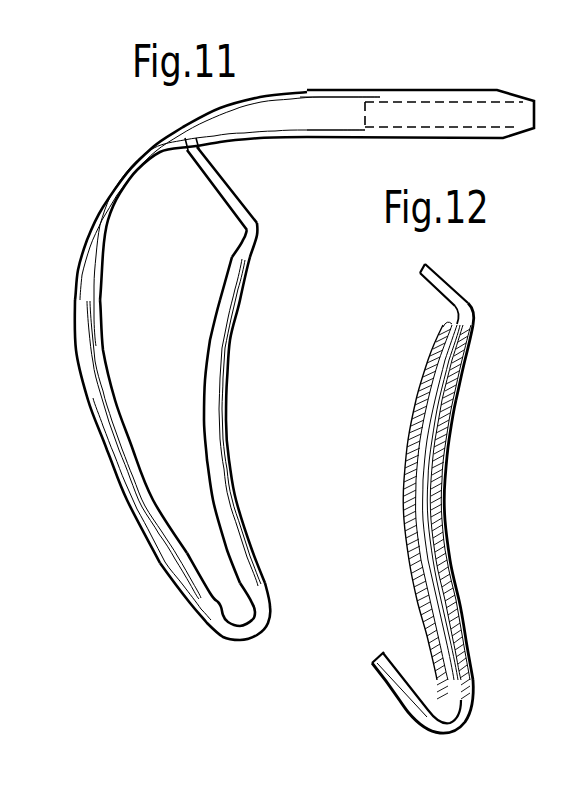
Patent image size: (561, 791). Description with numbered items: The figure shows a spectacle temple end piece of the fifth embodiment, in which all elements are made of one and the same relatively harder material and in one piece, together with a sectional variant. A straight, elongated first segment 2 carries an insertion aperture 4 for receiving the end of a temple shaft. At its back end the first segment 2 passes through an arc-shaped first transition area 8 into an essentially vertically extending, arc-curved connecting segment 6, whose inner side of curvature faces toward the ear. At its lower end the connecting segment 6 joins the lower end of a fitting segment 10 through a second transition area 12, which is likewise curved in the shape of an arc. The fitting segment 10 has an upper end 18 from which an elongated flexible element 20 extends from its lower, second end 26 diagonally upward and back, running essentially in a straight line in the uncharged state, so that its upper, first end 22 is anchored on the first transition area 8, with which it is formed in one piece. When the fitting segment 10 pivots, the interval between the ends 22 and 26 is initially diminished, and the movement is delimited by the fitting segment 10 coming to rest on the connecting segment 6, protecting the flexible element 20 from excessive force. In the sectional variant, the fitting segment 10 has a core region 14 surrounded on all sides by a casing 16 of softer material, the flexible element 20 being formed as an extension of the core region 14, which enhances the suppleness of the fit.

In FIG. 11, the first segment 2 is at (297, 103).
In FIG. 11, the insertion aperture 4 is at (442, 110).
In FIG. 11, the connecting segment 6 is at (128, 382).
In FIG. 11, the first transition area 8 is at (132, 158).
In FIG. 11, the fitting segment 10 is at (235, 370).
In FIG. 12, the fitting segment 10 is at (448, 477).
In FIG. 11, the second transition area 12 is at (265, 618).
In FIG. 12, the second transition area 12 is at (465, 720).
In FIG. 12, the core region 14 is at (443, 383).
In FIG. 12, the casing 16 is at (443, 530).
In FIG. 11, the upper end 18 is at (237, 263).
In FIG. 12, the upper end 18 is at (475, 337).
In FIG. 11, the flexible element 20 is at (223, 205).
In FIG. 12, the flexible element 20 is at (432, 295).
In FIG. 11, the first end 22 is at (200, 149).
In FIG. 11, the second end 26 is at (257, 238).
In FIG. 12, the second end 26 is at (460, 317).